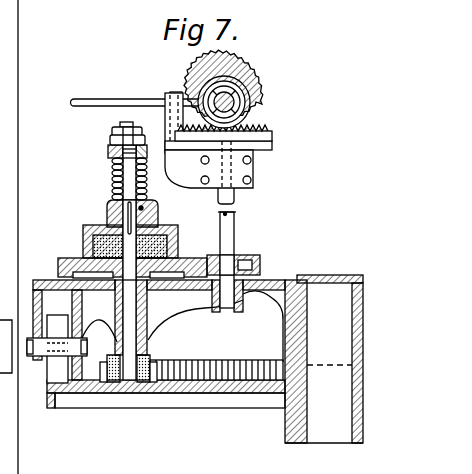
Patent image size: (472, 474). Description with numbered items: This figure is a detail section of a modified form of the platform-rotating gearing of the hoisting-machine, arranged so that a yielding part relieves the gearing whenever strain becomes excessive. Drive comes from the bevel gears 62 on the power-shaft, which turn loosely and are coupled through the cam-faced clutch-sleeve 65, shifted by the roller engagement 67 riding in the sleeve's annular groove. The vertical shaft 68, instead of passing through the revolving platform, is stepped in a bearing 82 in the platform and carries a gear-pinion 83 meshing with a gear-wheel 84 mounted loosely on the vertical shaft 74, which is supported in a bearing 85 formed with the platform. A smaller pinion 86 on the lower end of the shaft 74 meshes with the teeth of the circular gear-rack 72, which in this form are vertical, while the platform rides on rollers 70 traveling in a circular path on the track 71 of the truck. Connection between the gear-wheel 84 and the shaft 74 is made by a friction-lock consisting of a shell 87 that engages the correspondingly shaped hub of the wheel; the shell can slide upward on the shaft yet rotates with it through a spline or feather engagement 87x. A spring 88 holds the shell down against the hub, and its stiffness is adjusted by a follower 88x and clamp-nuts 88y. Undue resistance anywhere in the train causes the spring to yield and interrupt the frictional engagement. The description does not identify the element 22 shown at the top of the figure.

The lever arm 22 is at (103, 100).
The beveled gear 62 is at (242, 91).
The clutch-sleeve 65 is at (216, 96).
The roller engagement 67 is at (273, 138).
The vertical shaft 68 is at (234, 215).
The rollers or wheels 70 is at (52, 370).
The track or way 71 is at (50, 390).
The circular rack-gear 72 is at (201, 362).
The shaft 74 is at (150, 332).
The bearing 82 is at (262, 290).
The gear-pinion 83 is at (258, 258).
The gear-wheel 84 is at (166, 250).
The bearing 85 is at (99, 321).
The smaller pinion 86 is at (100, 396).
The shell 87 is at (84, 240).
The spline or feather engagement 87x is at (143, 210).
The spring 88 is at (112, 188).
The follower 88x is at (108, 152).
The clamp-nuts 88y is at (112, 131).